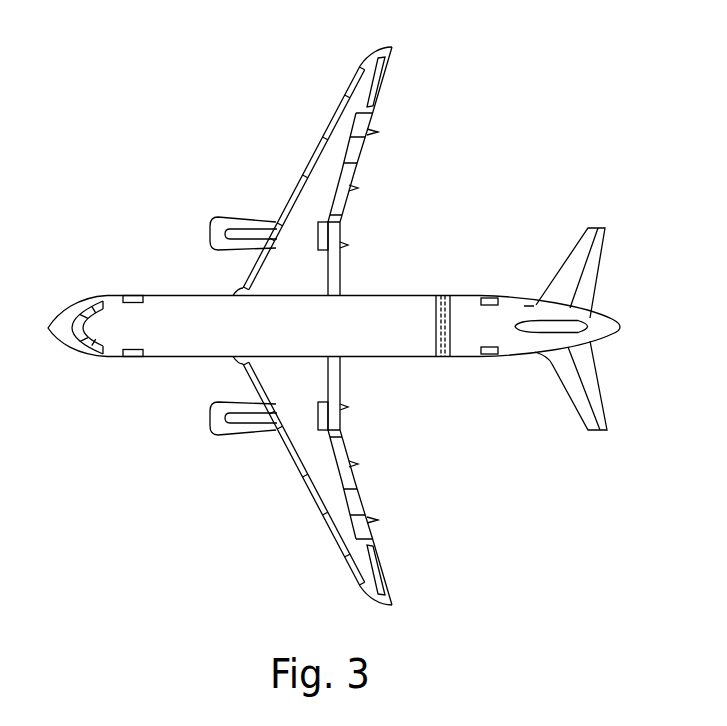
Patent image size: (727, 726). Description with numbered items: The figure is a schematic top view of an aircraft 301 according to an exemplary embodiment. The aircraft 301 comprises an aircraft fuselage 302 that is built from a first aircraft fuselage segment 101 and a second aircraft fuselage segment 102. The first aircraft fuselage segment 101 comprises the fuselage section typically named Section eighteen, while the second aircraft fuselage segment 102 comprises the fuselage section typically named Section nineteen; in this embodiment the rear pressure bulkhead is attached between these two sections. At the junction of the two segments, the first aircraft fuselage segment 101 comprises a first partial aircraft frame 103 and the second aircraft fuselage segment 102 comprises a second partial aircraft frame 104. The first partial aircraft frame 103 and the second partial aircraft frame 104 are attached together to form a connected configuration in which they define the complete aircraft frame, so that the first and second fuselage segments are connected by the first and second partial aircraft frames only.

The aircraft 301 is at (152, 135).
The aircraft fuselage 302 is at (230, 313).
The first aircraft fuselage segment 101 is at (413, 315).
The second aircraft fuselage segment 102 is at (462, 315).
The first partial aircraft frame 103 is at (433, 355).
The second partial aircraft frame 104 is at (452, 355).